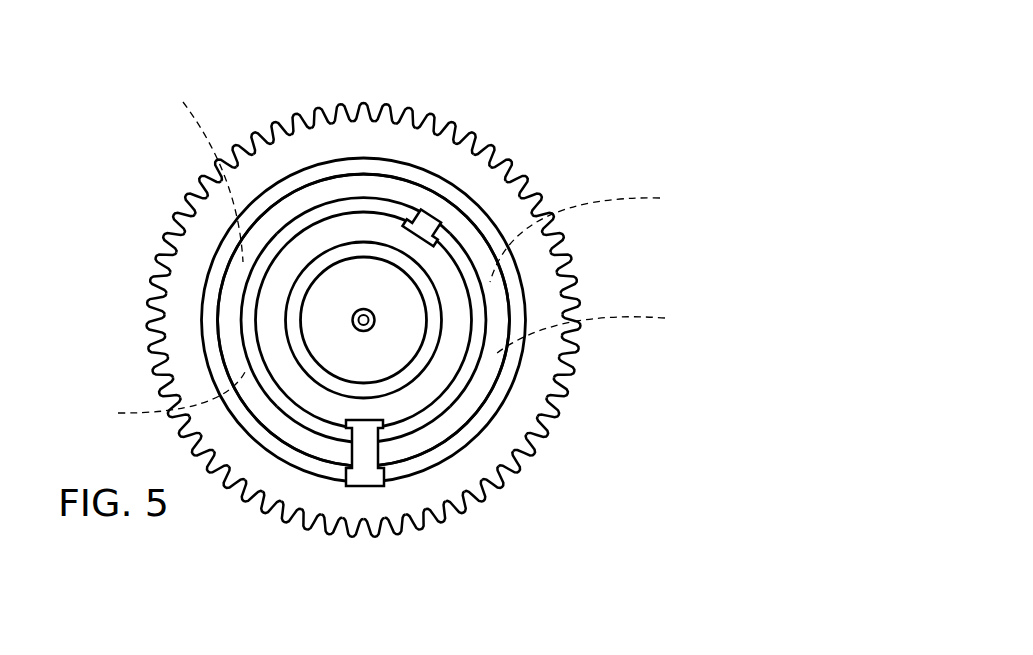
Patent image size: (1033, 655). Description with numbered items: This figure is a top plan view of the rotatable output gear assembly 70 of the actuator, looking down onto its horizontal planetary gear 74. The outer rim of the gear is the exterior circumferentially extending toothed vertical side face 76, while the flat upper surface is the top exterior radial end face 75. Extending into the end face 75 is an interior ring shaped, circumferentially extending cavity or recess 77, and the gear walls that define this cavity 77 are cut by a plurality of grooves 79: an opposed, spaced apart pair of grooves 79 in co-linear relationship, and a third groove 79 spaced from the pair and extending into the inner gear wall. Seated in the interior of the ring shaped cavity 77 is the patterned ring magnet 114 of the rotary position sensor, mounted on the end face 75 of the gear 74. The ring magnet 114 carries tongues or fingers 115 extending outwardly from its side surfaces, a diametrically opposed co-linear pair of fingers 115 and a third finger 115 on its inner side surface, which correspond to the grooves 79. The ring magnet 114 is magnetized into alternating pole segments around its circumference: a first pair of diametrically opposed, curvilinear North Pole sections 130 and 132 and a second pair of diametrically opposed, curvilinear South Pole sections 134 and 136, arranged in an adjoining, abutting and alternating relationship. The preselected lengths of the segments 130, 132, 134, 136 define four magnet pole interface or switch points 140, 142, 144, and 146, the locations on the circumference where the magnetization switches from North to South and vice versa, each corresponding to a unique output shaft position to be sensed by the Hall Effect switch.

The output gear assembly 70 is at (483, 118).
The planetary gear 74 is at (392, 147).
The top exterior radial end face 75 is at (392, 147).
The toothed vertical side face 76 is at (430, 120).
The ring shaped cavity 77 is at (500, 400).
The grooves 79 is at (420, 211).
The patterned ring magnet 114 is at (428, 221).
The fingers 115 is at (424, 228).
The North Pole section 130 is at (218, 297).
The North Pole section 132 is at (497, 298).
The South Pole section 134 is at (316, 195).
The South Pole section 136 is at (423, 440).
The magnet pole interface point 140 is at (156, 399).
The magnet pole interface point 142 is at (191, 168).
The magnet pole interface point 144 is at (603, 233).
The magnet pole interface point 146 is at (607, 330).